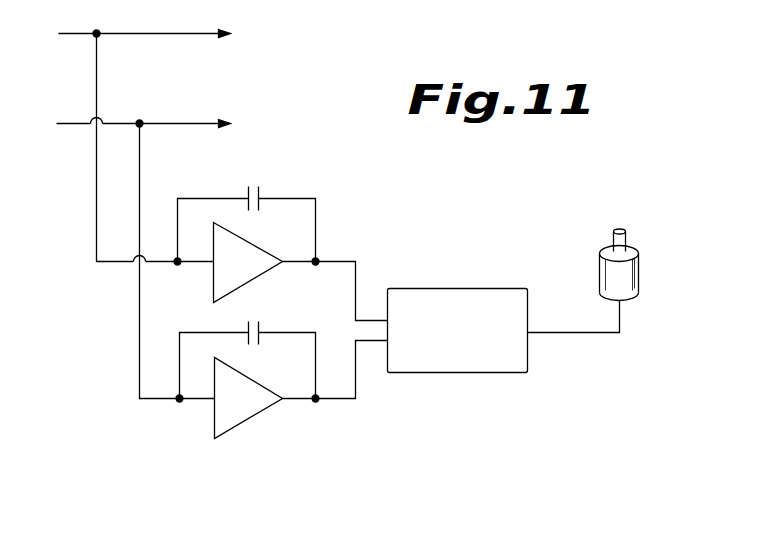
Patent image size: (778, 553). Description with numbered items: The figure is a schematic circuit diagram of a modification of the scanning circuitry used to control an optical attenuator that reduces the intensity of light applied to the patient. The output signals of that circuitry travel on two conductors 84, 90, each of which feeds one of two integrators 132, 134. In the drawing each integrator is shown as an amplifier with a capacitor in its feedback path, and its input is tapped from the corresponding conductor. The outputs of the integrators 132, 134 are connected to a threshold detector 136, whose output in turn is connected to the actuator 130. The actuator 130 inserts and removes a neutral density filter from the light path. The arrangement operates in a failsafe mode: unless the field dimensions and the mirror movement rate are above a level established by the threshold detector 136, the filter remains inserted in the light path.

The conductor 84 is at (162, 33).
The conductor 90 is at (187, 123).
The actuator 130 is at (638, 277).
The integrator 132 is at (292, 180).
The integrator 134 is at (280, 423).
The threshold detector 136 is at (510, 372).